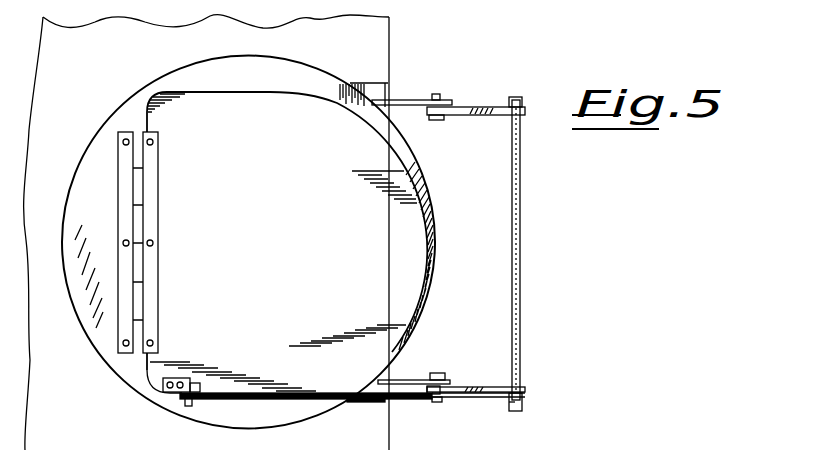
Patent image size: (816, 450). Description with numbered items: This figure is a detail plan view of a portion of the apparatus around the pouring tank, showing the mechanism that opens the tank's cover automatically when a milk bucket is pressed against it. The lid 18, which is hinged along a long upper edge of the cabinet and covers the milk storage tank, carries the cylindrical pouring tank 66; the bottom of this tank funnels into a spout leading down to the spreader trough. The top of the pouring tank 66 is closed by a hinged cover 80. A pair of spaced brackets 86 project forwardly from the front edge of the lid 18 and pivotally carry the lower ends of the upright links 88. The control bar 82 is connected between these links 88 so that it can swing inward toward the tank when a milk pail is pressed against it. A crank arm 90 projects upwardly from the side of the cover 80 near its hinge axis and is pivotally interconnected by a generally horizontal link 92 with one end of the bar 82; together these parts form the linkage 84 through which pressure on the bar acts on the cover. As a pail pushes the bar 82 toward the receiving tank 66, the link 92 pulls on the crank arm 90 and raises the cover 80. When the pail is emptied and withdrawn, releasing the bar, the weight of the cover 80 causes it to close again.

The lid 18 is at (380, 41).
The pouring tank 66 is at (172, 409).
The hinged cover 80 is at (402, 259).
The control bar 82 is at (522, 218).
The linkage 84 is at (456, 399).
The brackets 86 is at (409, 100).
The upright links 88 is at (485, 109).
The crank arm 90 is at (165, 392).
The horizontal link 92 is at (339, 398).